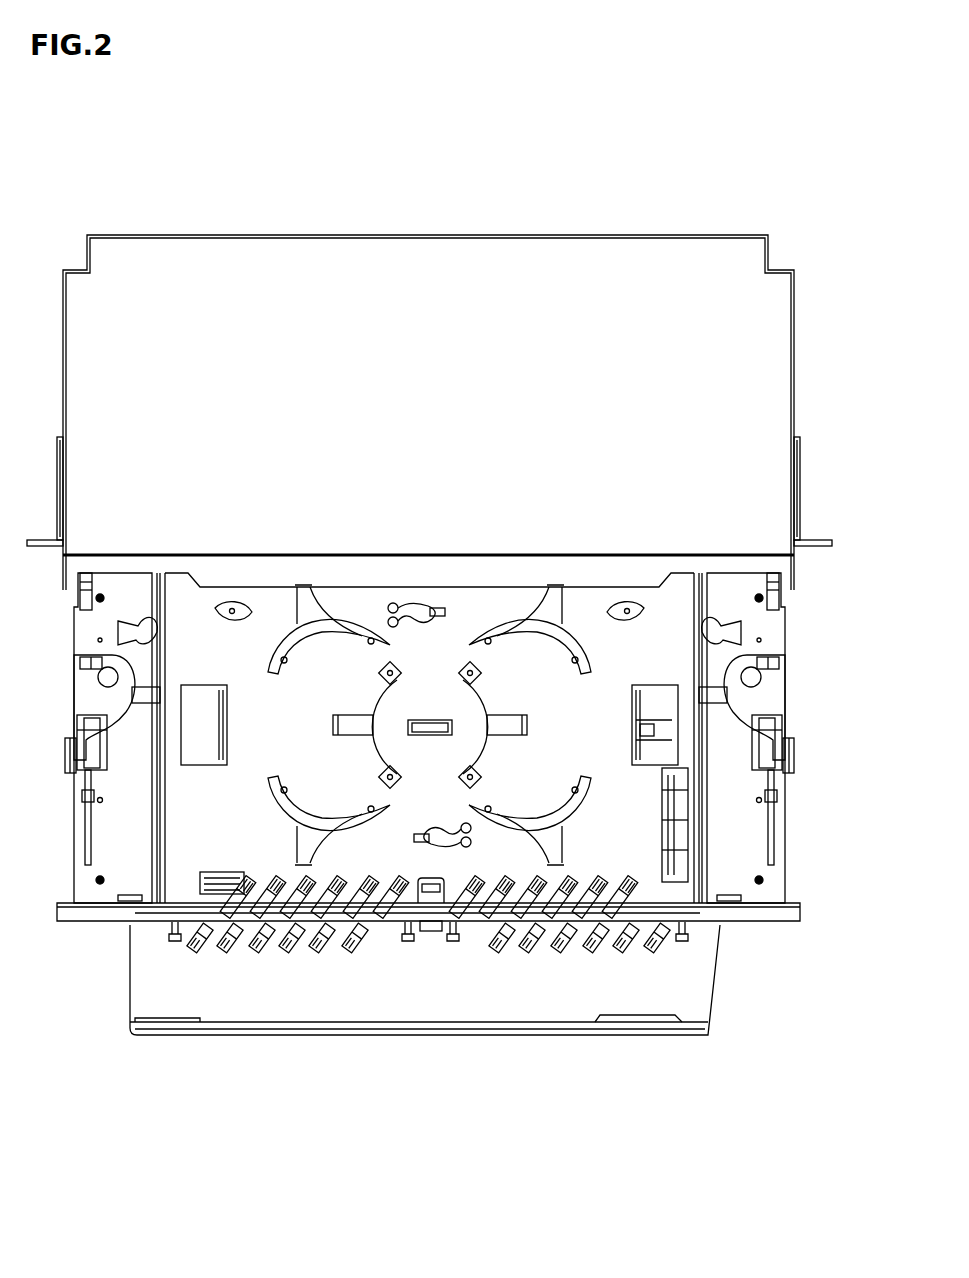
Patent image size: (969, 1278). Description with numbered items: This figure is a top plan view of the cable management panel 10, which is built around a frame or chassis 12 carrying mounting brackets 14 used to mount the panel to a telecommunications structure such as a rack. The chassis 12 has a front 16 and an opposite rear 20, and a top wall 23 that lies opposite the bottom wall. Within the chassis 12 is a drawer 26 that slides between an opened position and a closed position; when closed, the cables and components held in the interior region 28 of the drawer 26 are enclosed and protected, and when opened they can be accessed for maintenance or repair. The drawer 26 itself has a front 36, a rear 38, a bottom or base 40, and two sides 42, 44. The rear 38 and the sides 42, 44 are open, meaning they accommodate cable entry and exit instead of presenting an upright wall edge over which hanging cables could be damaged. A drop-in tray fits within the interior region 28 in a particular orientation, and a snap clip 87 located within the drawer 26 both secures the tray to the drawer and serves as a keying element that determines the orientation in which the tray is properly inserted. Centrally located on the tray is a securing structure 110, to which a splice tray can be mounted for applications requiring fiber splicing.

The cable management panel 10 is at (750, 163).
The chassis 12 is at (590, 258).
The mounting brackets 14 is at (40, 540).
The front 16 is at (441, 1055).
The rear 20 is at (480, 190).
The top wall 23 is at (460, 401).
The drawer 26 is at (45, 750).
The interior region 28 is at (292, 731).
The front 36 is at (758, 960).
The rear 38 is at (472, 578).
The bottom 40 is at (598, 622).
The side 42 is at (120, 828).
The side 44 is at (738, 840).
The snap clip 87 is at (430, 905).
The securing structure 110 is at (428, 737).